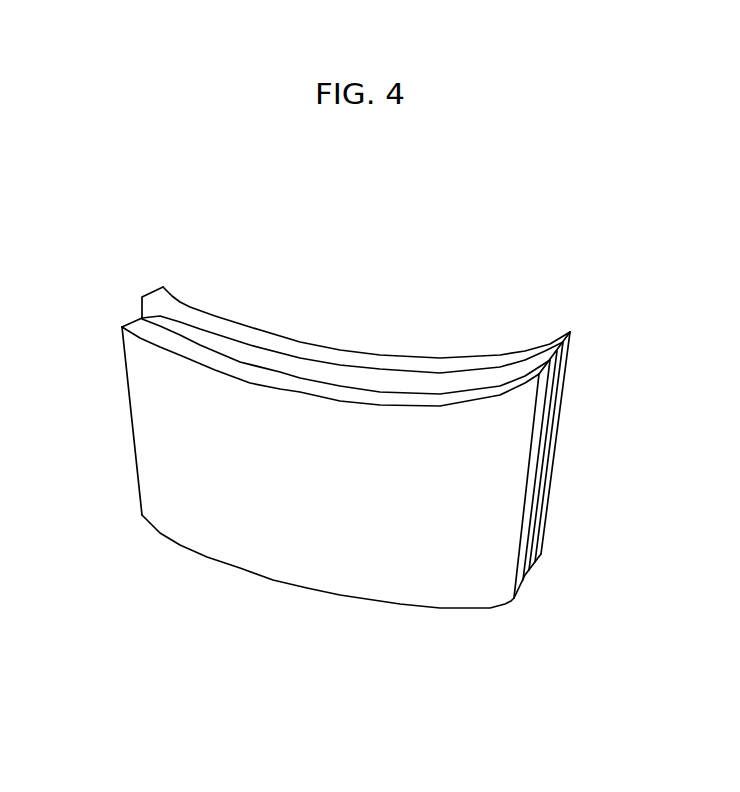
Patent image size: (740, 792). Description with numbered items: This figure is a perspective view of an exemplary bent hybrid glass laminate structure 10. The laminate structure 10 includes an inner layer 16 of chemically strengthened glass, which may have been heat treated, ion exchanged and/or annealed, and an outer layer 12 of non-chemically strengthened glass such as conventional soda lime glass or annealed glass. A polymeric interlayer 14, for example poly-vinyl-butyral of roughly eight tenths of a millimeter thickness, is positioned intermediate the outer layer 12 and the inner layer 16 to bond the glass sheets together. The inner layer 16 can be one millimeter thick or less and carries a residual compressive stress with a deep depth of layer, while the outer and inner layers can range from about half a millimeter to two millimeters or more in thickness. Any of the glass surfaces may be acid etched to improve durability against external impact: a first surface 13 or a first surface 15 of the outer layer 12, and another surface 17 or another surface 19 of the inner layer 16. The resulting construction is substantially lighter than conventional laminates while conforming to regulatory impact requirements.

The laminate structure 10 is at (259, 648).
The outer layer 12 is at (520, 575).
The first surface of the outer layer 13 is at (127, 378).
The polymeric interlayer 14 is at (191, 341).
The first surface of the outer layer 15 is at (272, 369).
The inner layer 16 is at (166, 291).
The surface of the inner layer 17 is at (561, 333).
The surface of the inner layer 19 is at (410, 352).